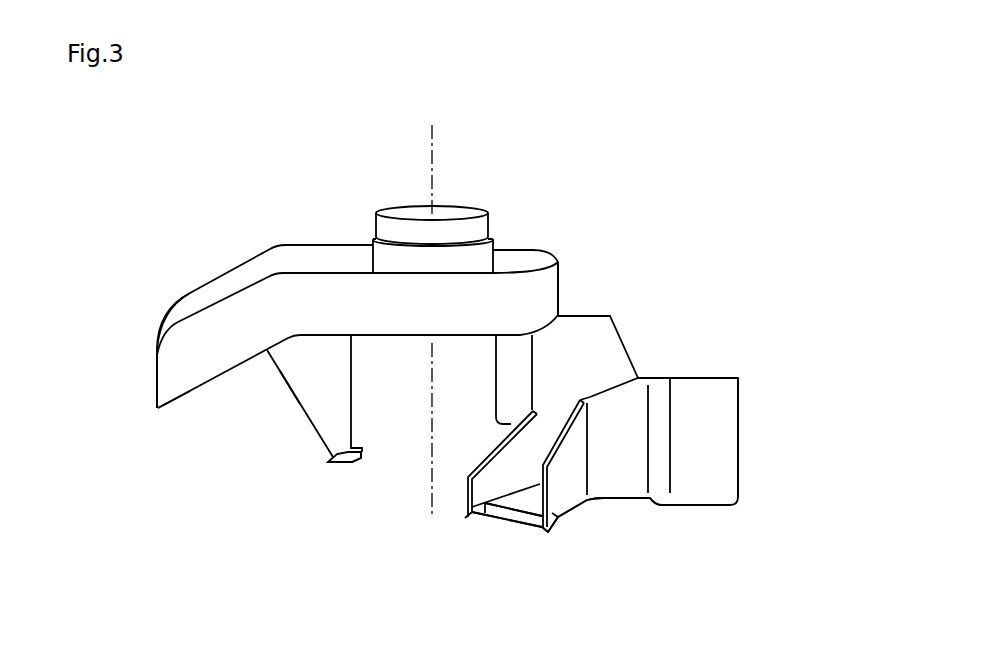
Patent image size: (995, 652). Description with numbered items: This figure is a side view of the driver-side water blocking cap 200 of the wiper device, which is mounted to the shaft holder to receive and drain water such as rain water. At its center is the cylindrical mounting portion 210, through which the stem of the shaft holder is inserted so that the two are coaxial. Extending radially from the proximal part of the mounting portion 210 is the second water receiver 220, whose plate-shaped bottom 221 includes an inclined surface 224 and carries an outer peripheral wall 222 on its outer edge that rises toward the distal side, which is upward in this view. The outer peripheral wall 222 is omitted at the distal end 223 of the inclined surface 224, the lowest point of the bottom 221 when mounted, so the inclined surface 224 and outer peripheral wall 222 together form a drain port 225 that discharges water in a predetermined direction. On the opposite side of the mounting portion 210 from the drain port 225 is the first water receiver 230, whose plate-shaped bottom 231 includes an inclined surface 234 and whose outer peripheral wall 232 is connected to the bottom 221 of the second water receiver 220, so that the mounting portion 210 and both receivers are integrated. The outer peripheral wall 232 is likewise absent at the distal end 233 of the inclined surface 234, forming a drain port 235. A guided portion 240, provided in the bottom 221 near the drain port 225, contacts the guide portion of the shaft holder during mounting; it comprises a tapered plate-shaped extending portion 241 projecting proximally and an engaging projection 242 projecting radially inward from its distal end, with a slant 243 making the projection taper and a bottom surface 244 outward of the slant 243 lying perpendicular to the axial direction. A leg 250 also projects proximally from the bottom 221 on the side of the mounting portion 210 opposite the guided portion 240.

The water blocking cap 200 is at (664, 231).
The mounting portion 210 is at (490, 224).
The second water receiver 220 is at (243, 263).
The bottom 221 is at (322, 336).
The outer peripheral wall 222 is at (550, 281).
The distal end 223 is at (158, 408).
The inclined surface 224 is at (174, 402).
The drain port 225 is at (187, 277).
The first water receiver 230 is at (710, 378).
The bottom 231 is at (690, 505).
The outer peripheral wall 232 is at (722, 440).
The distal end 233 is at (503, 513).
The inclined surface 234 is at (573, 512).
The drain port 235 is at (543, 542).
The guided portion 240 is at (308, 422).
The extending portion 241 is at (296, 404).
The engaging projection 242 is at (330, 458).
The slant 243 is at (360, 463).
The bottom surface 244 is at (338, 462).
The leg 250 is at (495, 363).